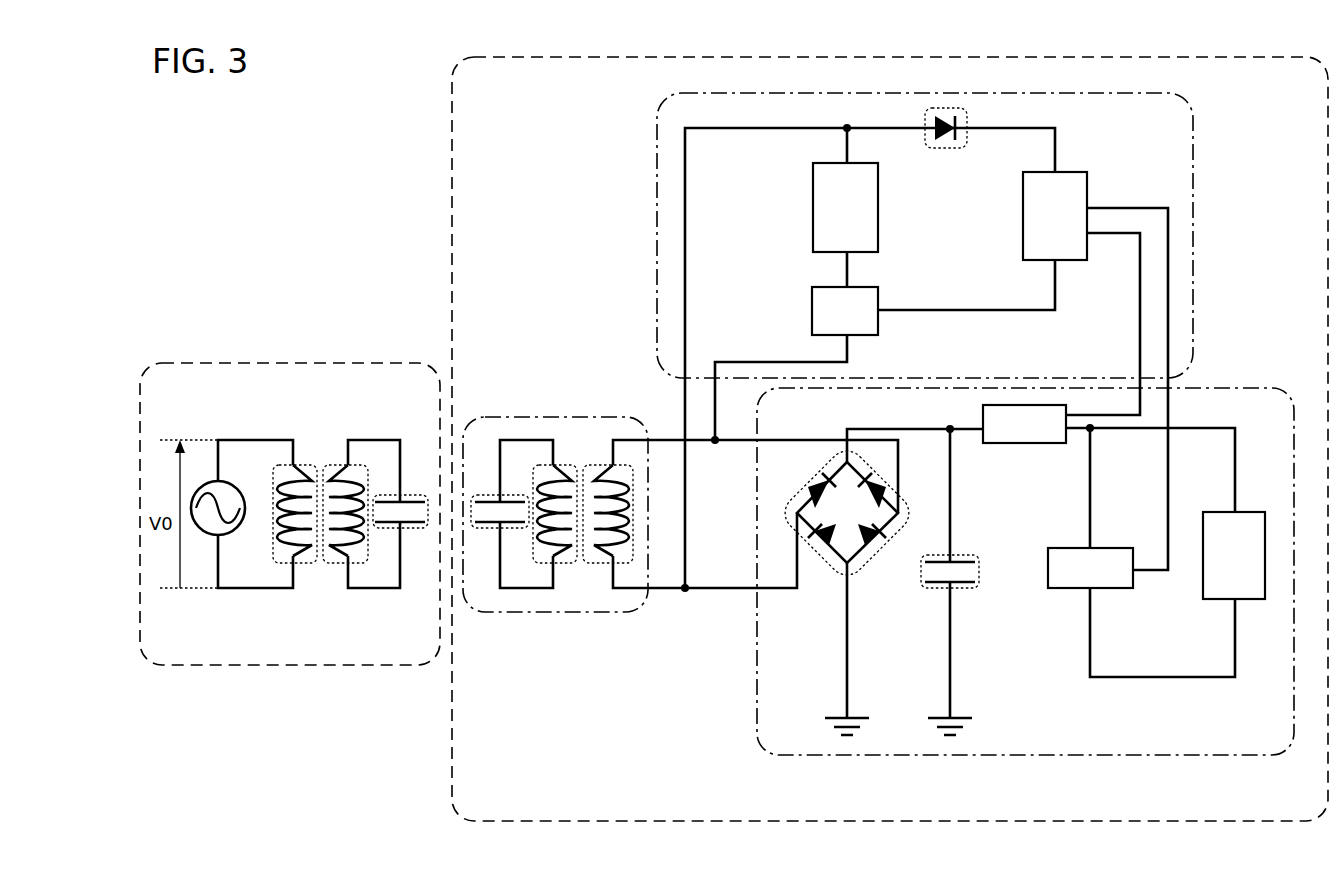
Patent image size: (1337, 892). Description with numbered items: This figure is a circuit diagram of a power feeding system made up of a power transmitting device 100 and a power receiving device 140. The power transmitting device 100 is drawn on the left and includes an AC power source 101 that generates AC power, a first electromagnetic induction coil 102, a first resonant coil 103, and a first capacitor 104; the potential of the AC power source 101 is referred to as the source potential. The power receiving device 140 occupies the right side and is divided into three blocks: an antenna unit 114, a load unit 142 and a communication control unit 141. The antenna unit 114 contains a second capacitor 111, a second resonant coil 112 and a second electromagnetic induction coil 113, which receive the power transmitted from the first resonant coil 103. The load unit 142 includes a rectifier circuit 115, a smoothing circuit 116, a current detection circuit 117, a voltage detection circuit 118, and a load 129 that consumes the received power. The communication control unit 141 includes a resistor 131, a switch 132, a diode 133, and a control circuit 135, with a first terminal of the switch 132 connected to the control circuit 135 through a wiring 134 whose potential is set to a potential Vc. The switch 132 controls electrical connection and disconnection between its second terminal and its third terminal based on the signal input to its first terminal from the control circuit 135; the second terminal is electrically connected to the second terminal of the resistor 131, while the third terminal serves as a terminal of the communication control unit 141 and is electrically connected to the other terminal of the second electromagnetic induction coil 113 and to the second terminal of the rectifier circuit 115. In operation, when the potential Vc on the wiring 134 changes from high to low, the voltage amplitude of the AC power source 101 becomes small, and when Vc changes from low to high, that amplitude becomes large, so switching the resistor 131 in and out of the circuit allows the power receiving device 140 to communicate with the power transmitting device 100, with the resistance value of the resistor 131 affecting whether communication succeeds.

The power transmitting device 100 is at (249, 644).
The AC power source 101 is at (232, 483).
The first electromagnetic induction coil 102 is at (313, 465).
The first resonant coil 103 is at (336, 563).
The first capacitor 104 is at (410, 528).
The second capacitor 111 is at (483, 495).
The second resonant coil 112 is at (565, 465).
The second electromagnetic induction coil 113 is at (598, 465).
The antenna unit 114 is at (567, 612).
The rectifier circuit 115 is at (818, 577).
The smoothing circuit 116 is at (970, 555).
The current detection circuit 117 is at (1024, 424).
The voltage detection circuit 118 is at (1090, 568).
The load 129 is at (1234, 555).
The resistor 131 is at (845, 207).
The switch 132 is at (845, 311).
The diode 133 is at (946, 108).
The wiring 134 is at (980, 314).
The control circuit 135 is at (1055, 216).
The power receiving device 140 is at (1272, 812).
The communication control unit 141 is at (1107, 359).
The load unit 142 is at (1231, 743).